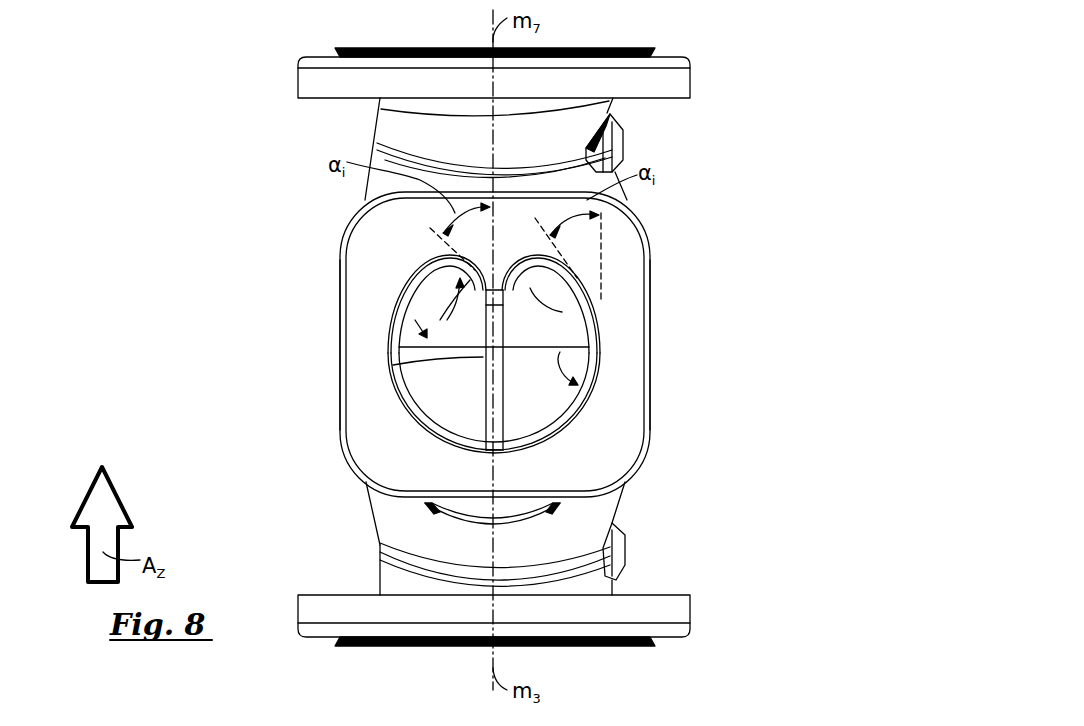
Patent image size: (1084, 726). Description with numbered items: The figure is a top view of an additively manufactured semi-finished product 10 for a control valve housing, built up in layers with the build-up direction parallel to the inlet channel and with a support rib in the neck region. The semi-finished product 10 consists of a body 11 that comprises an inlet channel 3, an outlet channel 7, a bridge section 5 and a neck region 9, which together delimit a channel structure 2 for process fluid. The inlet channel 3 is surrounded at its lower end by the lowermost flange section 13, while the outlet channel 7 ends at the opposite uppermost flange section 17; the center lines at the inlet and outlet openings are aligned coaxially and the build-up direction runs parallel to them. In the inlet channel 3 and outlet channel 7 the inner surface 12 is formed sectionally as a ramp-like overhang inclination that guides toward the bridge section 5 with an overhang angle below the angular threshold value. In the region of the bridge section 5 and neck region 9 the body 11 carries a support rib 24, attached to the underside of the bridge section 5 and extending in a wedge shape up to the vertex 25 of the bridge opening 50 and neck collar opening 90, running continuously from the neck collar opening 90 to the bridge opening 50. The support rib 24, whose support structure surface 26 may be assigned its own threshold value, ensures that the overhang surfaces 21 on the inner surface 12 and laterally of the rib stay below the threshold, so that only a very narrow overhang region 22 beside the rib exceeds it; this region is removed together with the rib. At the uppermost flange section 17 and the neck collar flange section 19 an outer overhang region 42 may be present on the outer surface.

The semi-finished product 10 is at (258, 201).
The uppermost flange section 17 is at (660, 87).
The lowermost flange section 13 is at (663, 607).
The outlet channel 7 is at (563, 122).
The overhang region 42 is at (625, 548).
The body 11 is at (400, 510).
The inlet channel 3 is at (527, 514).
The neck collar flange section 19 is at (625, 247).
The neck region 9 is at (612, 336).
The channel structure 2 is at (395, 318).
The support structure surface 26 is at (480, 383).
The overhang surfaces 21 is at (402, 282).
The overhang region 22 is at (422, 330).
The vertex 25 is at (512, 240).
The inner surface 12 is at (590, 347).
The support rib 24 is at (393, 365).
The neck collar opening 90 is at (594, 388).
The bridge section 5 is at (540, 400).
The bridge opening 50 is at (565, 353).